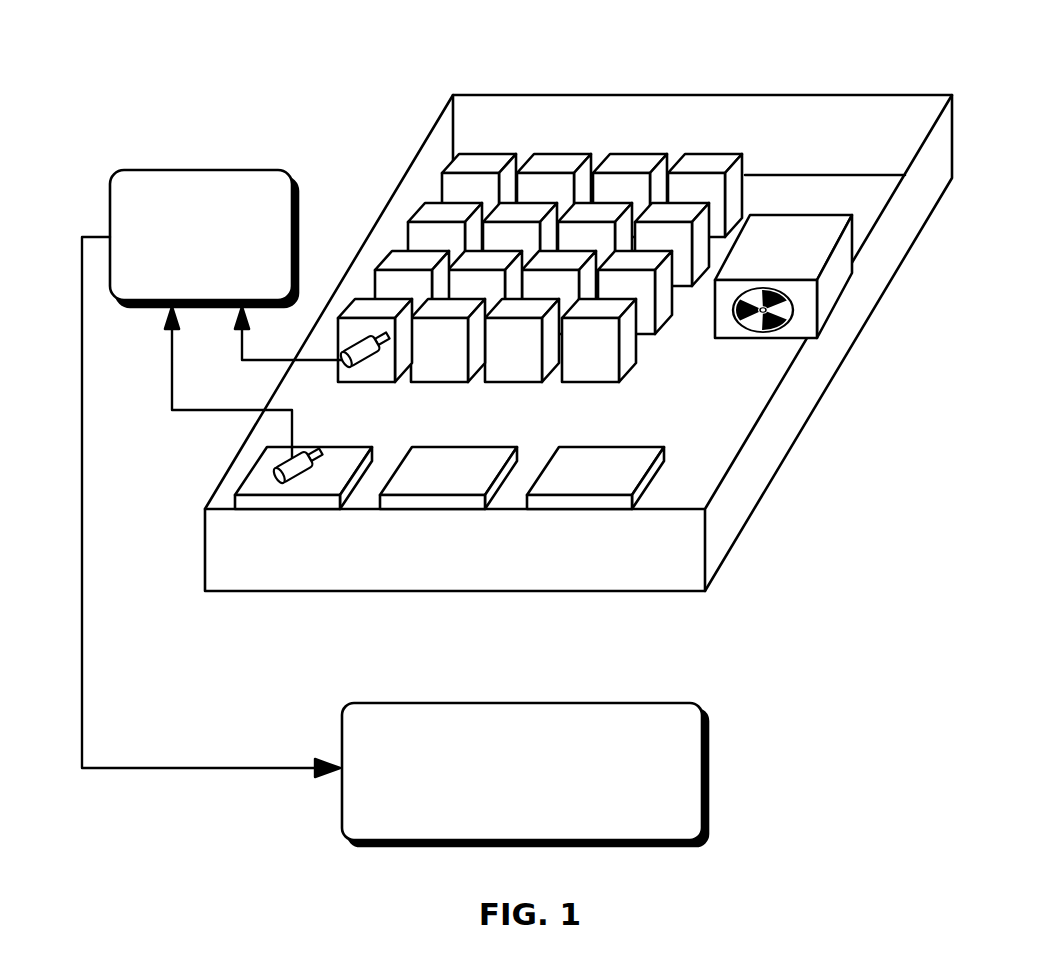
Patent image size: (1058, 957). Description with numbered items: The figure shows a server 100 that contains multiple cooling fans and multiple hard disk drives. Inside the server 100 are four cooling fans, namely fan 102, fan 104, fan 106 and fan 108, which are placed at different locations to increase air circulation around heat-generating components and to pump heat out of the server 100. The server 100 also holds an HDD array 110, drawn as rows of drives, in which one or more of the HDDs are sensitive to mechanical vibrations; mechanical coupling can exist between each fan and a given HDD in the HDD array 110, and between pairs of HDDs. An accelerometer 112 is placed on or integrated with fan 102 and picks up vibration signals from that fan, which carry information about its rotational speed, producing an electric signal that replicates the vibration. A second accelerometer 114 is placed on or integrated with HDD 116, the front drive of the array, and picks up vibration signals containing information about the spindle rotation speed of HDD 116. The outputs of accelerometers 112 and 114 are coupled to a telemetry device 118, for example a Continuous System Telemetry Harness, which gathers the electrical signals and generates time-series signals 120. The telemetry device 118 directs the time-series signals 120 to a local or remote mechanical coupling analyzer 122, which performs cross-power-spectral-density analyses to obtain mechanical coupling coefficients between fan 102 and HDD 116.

The server 100 is at (453, 95).
The fan 102 is at (320, 447).
The fan 104 is at (483, 448).
The fan 106 is at (602, 452).
The fan 108 is at (783, 276).
The HDD array 110 is at (457, 152).
The accelerometer 112 is at (300, 484).
The accelerometer 114 is at (362, 352).
The HDD 116 is at (383, 307).
The telemetry device 118 is at (227, 316).
The time-series signals 120 is at (192, 768).
The mechanical coupling analyzer 122 is at (525, 774).